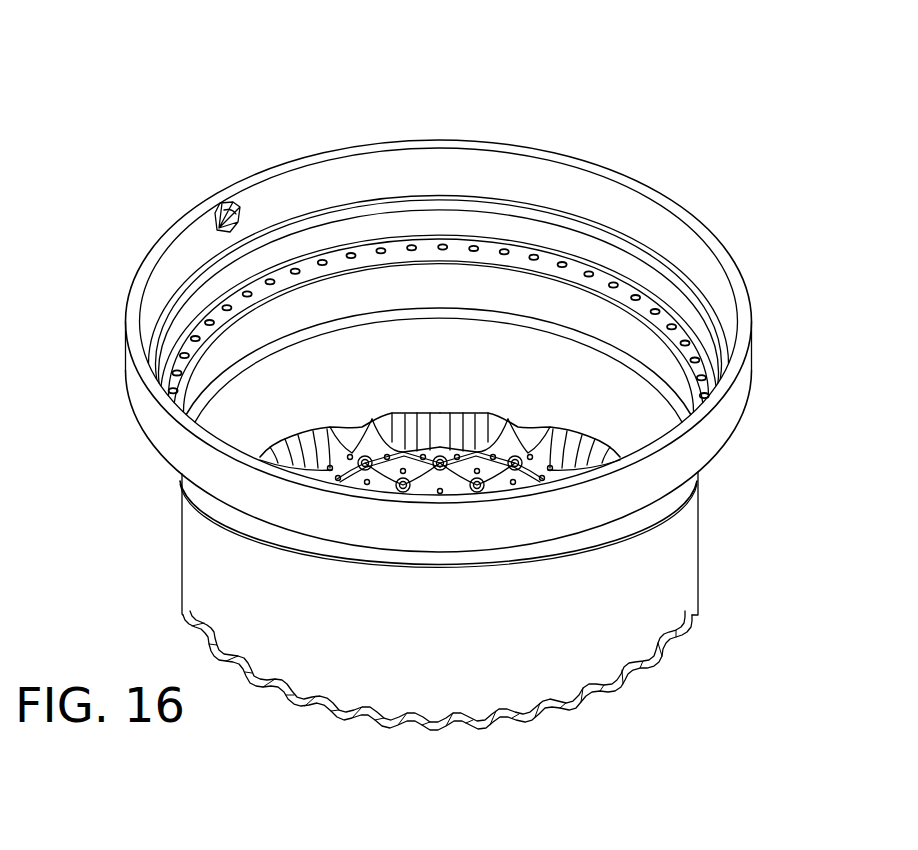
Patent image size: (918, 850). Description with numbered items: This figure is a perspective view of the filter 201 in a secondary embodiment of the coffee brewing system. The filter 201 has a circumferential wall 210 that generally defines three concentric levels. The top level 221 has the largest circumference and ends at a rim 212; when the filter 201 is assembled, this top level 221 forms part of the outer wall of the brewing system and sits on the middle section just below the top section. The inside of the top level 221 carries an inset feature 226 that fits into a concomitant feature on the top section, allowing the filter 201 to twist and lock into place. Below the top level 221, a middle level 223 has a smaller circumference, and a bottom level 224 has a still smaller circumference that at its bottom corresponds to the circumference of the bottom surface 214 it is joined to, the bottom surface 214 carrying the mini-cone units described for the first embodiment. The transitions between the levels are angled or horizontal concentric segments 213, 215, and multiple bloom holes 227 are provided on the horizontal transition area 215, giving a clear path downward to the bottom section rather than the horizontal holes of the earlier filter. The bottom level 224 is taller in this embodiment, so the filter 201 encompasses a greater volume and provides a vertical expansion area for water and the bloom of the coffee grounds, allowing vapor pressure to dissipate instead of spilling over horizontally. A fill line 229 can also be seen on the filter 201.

The filter 201 is at (126, 236).
The circumferential wall 210 is at (247, 540).
The rim 212 is at (173, 233).
The concentric segment 213 is at (315, 218).
The bottom surface 214 is at (597, 693).
The horizontal transition area 215 is at (380, 243).
The top level 221 is at (150, 407).
The middle level 223 is at (650, 277).
The bottom level 224 is at (180, 523).
The inset feature 226 is at (236, 224).
The bloom holes 227 is at (468, 224).
The fill line 229 is at (580, 337).